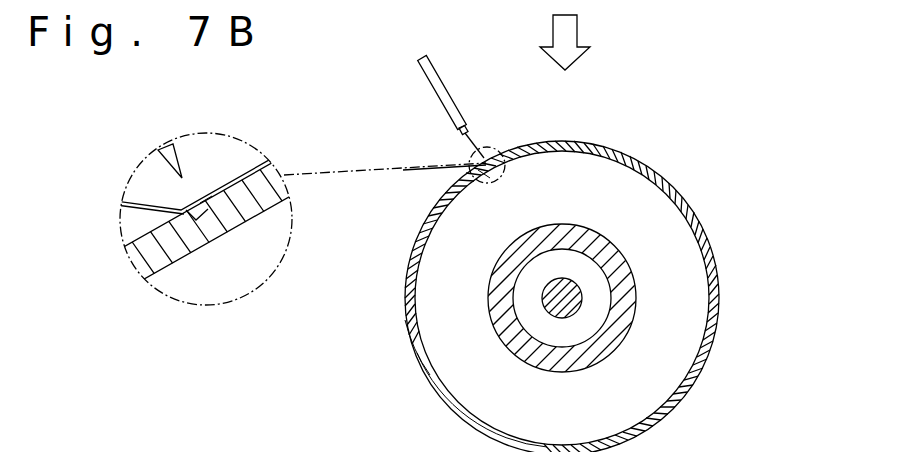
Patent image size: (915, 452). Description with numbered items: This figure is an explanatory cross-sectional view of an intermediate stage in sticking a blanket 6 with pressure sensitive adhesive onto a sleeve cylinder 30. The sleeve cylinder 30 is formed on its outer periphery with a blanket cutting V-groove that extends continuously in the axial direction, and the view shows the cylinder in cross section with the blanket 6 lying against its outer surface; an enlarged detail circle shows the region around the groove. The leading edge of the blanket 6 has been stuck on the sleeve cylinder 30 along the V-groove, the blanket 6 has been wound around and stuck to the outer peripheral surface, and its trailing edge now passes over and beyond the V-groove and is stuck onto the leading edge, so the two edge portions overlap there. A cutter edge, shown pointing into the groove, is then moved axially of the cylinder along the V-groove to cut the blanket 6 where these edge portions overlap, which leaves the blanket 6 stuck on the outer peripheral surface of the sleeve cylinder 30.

The blanket with pressure sensitive adhesive 6 is at (603, 147).
The sleeve cylinder 30 is at (418, 360).